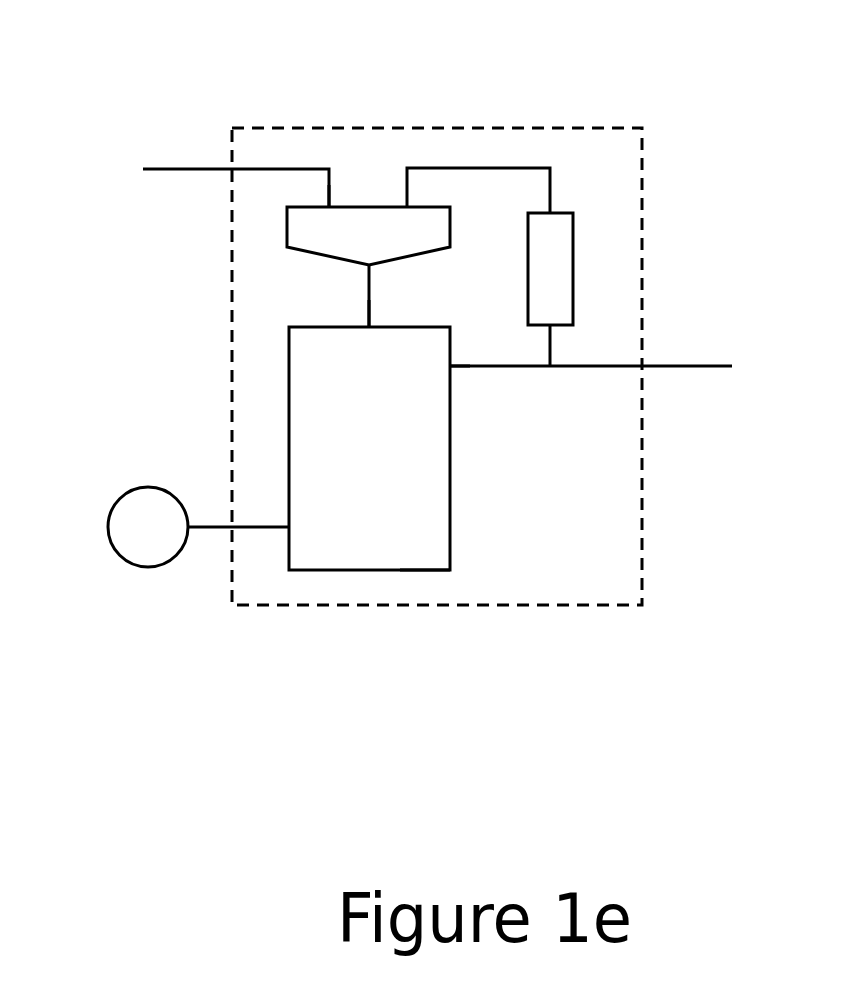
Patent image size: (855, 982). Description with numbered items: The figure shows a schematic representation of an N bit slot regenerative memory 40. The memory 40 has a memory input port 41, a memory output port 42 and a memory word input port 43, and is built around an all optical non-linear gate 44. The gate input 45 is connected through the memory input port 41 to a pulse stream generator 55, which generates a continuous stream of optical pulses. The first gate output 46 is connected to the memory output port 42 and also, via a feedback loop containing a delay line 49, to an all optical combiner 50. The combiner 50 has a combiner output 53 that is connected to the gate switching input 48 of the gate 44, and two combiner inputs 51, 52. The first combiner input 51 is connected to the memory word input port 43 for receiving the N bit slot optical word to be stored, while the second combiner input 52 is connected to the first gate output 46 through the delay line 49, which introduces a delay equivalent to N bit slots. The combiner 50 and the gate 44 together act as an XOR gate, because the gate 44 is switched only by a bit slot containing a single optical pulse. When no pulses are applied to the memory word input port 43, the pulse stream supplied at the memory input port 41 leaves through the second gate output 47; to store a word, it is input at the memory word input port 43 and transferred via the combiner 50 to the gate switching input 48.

The regenerative memory 40 is at (534, 630).
The memory input port 41 is at (232, 527).
The memory output port 42 is at (642, 364).
The memory word input port 43 is at (232, 169).
The all optical non-linear gate 44 is at (430, 570).
The gate input 45 is at (289, 523).
The first gate output 46 is at (450, 372).
The second gate output 47 is at (470, 507).
The gate switching input 48 is at (380, 325).
The delay line 49 is at (573, 259).
The all optical combiner 50 is at (450, 228).
The first combiner input 51 is at (329, 207).
The second combiner input 52 is at (408, 206).
The combiner output 53 is at (369, 265).
The pulse stream generator 55 is at (123, 558).